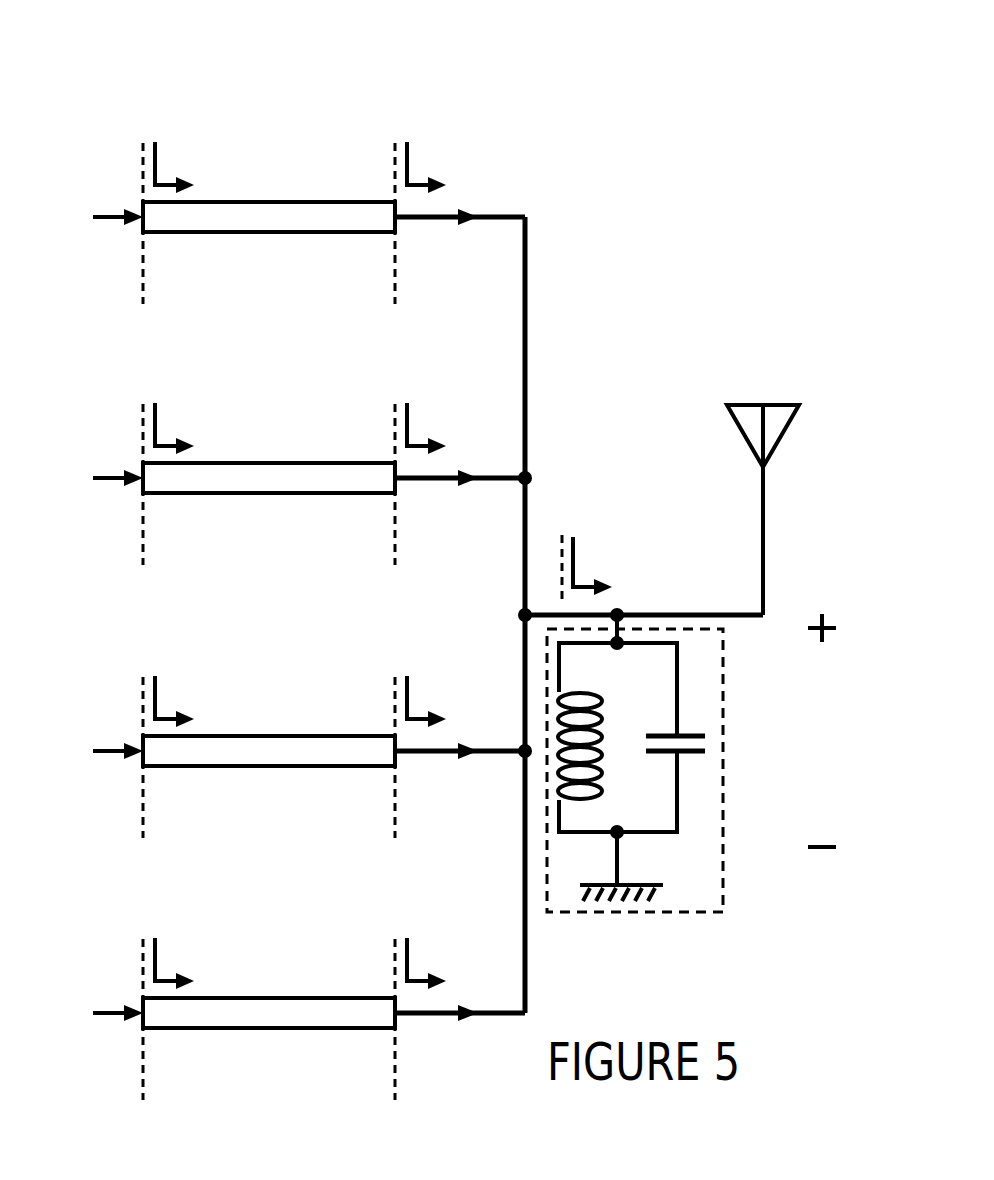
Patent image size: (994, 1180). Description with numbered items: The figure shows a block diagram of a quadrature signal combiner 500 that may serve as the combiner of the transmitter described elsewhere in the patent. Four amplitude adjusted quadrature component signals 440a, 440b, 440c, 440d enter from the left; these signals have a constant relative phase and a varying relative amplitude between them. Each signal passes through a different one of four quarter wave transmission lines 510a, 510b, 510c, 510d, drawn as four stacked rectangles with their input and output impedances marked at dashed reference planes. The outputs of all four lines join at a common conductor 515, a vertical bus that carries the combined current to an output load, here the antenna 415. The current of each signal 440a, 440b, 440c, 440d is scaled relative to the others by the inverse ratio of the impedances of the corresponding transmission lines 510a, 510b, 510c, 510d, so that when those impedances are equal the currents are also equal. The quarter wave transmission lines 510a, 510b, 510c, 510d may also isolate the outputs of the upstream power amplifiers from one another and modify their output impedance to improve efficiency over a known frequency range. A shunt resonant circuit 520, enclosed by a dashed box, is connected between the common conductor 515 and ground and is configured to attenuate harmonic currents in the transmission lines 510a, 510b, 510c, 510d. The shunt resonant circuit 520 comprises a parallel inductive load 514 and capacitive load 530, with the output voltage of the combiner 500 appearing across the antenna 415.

The quadrature signal combiner 500 is at (430, 44).
The quarter wave transmission line 510a is at (230, 202).
The quarter wave transmission line 510b is at (230, 463).
The quarter wave transmission line 510c is at (230, 736).
The quarter wave transmission line 510d is at (230, 998).
The amplitude adjusted quadrature component signal 440a is at (115, 227).
The amplitude adjusted quadrature component signal 440b is at (115, 488).
The amplitude adjusted quadrature component signal 440c is at (115, 761).
The amplitude adjusted quadrature component signal 440d is at (115, 1023).
The common conductor 515 is at (528, 294).
The antenna 415 is at (766, 485).
The inductive load 514 is at (584, 690).
The capacitive load 530 is at (662, 756).
The shunt resonant circuit 520 is at (666, 767).